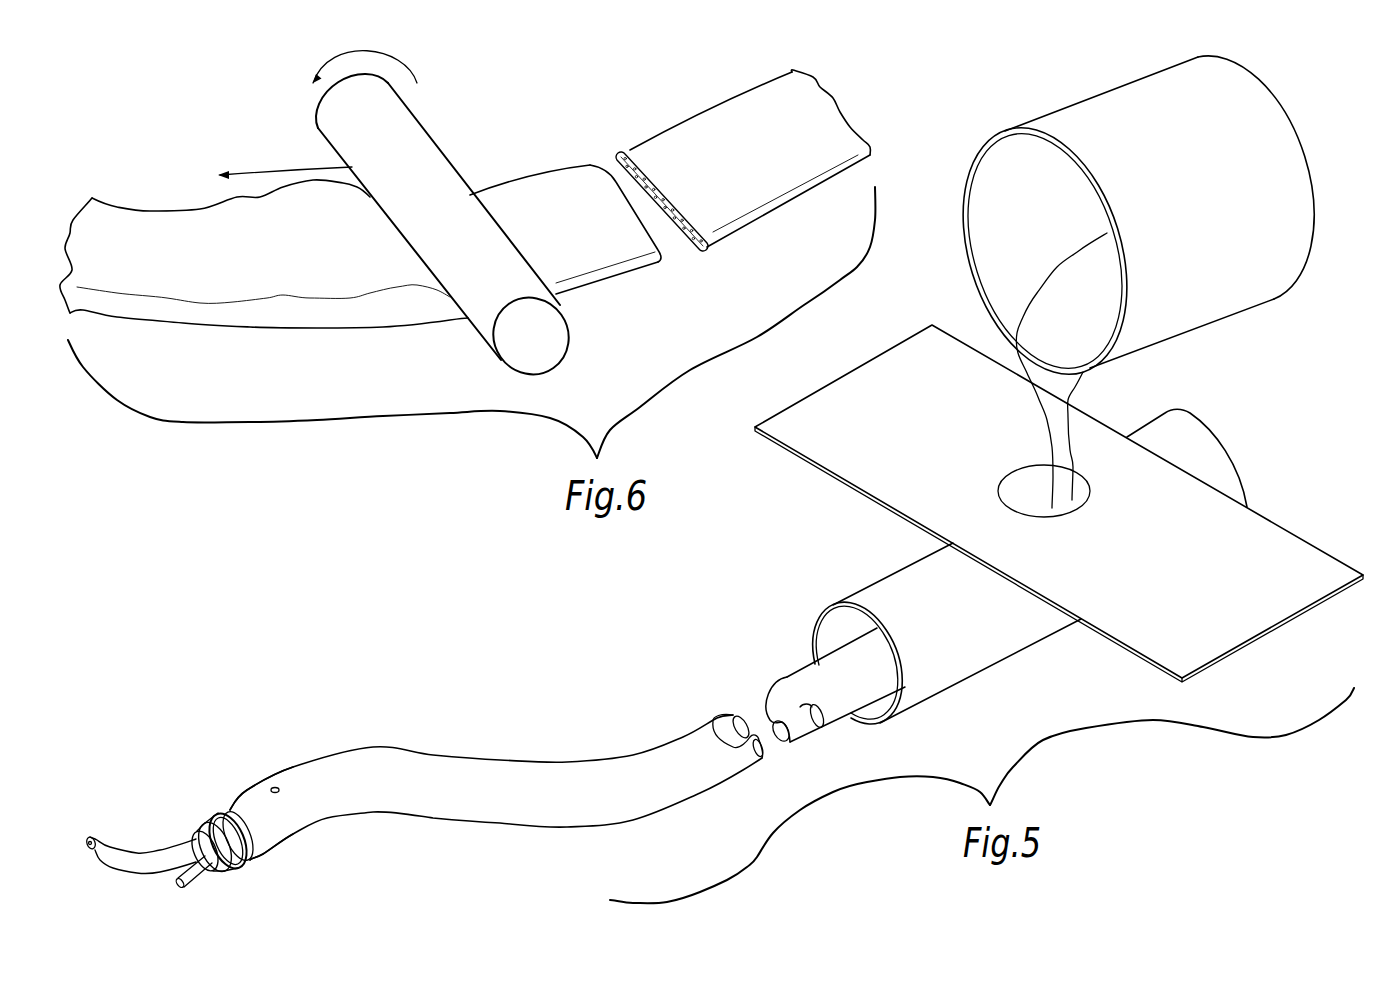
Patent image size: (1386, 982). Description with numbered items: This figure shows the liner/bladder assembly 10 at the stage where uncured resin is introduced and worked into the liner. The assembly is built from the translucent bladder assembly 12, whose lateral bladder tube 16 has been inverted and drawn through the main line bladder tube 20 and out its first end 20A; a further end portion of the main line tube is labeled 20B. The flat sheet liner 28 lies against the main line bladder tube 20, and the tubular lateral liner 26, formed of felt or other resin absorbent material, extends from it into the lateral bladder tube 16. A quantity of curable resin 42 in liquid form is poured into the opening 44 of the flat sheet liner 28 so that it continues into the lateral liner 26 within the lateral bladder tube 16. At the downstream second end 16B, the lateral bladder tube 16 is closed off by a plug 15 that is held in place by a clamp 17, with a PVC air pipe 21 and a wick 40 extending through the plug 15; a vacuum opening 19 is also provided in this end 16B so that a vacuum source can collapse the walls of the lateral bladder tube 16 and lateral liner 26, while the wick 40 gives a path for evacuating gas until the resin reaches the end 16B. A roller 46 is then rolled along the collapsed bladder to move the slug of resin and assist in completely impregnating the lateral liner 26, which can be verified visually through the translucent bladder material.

In FIG. 6, the liner/bladder assembly 10 is at (465, 201).
In FIG. 5, the liner/bladder assembly 10 is at (601, 788).
In FIG. 6, the bladder assembly 12 is at (723, 112).
In FIG. 5, the bladder assembly 12 is at (497, 803).
In FIG. 5, the plug 15 is at (225, 853).
In FIG. 6, the lateral bladder tube 16 is at (650, 143).
In FIG. 5, the lateral bladder tube 16 is at (623, 773).
In FIG. 5, the second end of lateral bladder tube 16B is at (268, 837).
In FIG. 5, the clamp 17 is at (223, 817).
In FIG. 5, the vacuum opening 19 is at (277, 787).
In FIG. 5, the main line bladder tube 20 is at (1036, 570).
In FIG. 5, the first end of main line bladder tube 20A is at (1188, 427).
In FIG. 5, the lower tube portion 20B is at (915, 707).
In FIG. 5, the PVC air pipe 21 is at (93, 833).
In FIG. 6, the lateral liner 26 is at (625, 173).
In FIG. 5, the lateral liner 26 is at (772, 700).
In FIG. 5, the flat sheet liner 28 is at (1059, 503).
In FIG. 5, the wick 40 is at (190, 873).
In FIG. 5, the curable resin 42 is at (1073, 283).
In FIG. 5, the opening of flat sheet liner 44 is at (1017, 493).
In FIG. 6, the roller 46 is at (418, 118).